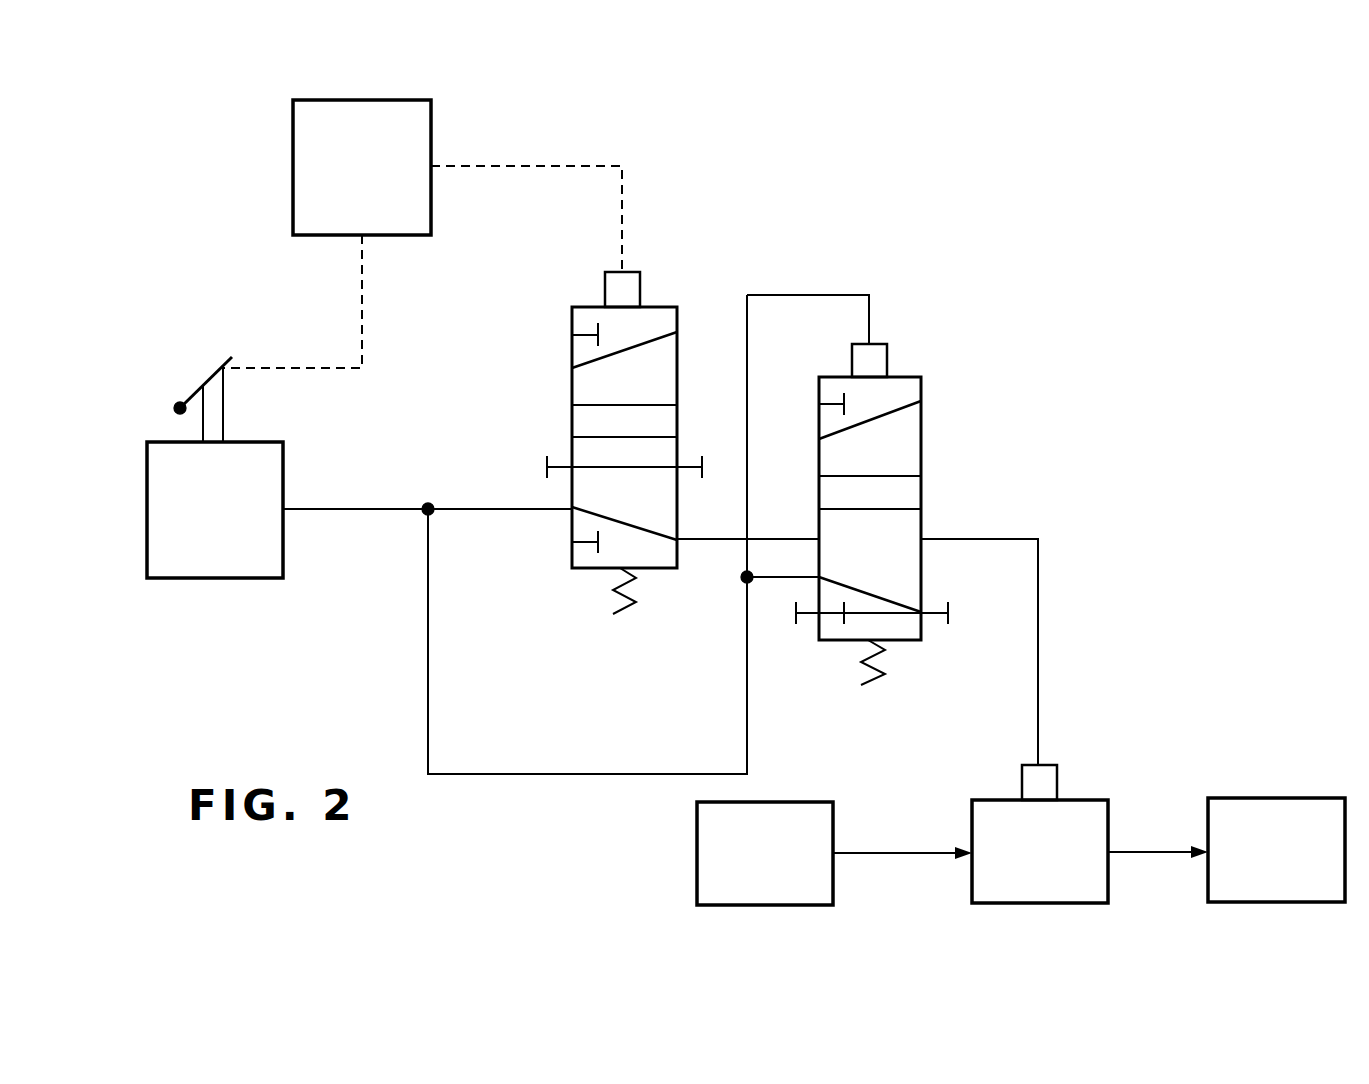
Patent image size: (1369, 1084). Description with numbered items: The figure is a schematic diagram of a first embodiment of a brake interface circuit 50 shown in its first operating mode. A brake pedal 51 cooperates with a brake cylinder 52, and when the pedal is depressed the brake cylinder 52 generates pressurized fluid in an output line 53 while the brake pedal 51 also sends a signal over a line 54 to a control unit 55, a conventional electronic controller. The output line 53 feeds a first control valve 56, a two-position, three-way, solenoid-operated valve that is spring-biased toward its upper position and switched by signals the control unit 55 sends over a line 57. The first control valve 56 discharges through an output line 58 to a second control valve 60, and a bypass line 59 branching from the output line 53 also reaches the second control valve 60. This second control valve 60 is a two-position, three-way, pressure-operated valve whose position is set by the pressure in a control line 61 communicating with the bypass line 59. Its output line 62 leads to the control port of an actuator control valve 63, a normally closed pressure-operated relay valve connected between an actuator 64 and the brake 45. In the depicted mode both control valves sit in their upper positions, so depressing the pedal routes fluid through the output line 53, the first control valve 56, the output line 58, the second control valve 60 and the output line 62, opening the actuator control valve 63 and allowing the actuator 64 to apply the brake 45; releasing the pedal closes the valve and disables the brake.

The brake 45 is at (1300, 810).
The brake interface circuit 50 is at (985, 193).
The brake pedal 51 is at (193, 392).
The brake cylinder 52 is at (215, 580).
The output line 53 is at (348, 510).
The line 54 is at (362, 307).
The control unit 55 is at (297, 128).
The first control valve 56 is at (653, 307).
The line 57 is at (528, 166).
The output line 58 is at (779, 538).
The bypass line 59 is at (547, 775).
The second control valve 60 is at (904, 374).
The control line 61 is at (804, 292).
The output line 62 is at (973, 538).
The actuator control valve 63 is at (1085, 807).
The actuator 64 is at (705, 832).